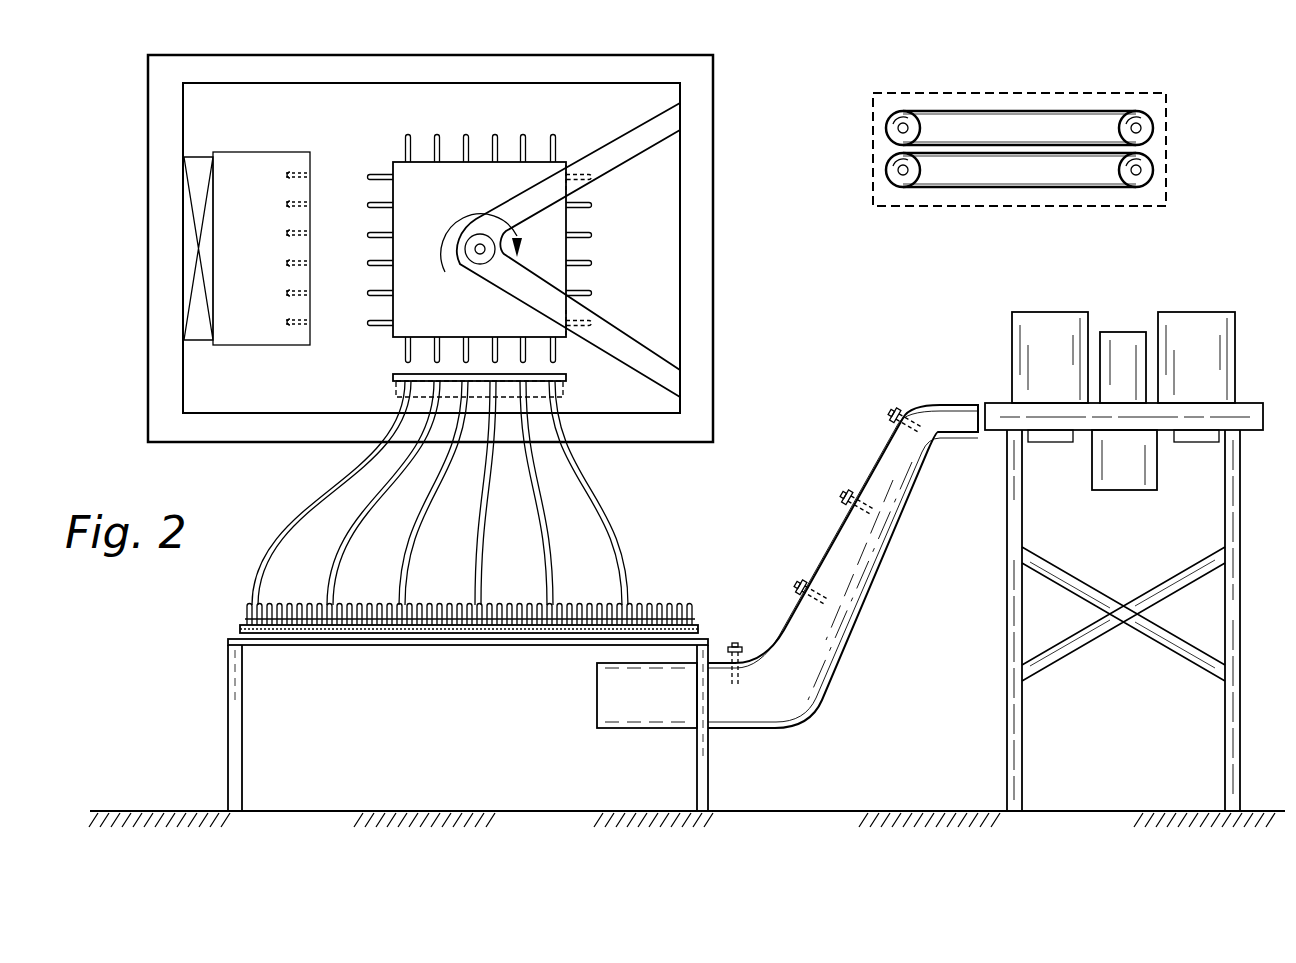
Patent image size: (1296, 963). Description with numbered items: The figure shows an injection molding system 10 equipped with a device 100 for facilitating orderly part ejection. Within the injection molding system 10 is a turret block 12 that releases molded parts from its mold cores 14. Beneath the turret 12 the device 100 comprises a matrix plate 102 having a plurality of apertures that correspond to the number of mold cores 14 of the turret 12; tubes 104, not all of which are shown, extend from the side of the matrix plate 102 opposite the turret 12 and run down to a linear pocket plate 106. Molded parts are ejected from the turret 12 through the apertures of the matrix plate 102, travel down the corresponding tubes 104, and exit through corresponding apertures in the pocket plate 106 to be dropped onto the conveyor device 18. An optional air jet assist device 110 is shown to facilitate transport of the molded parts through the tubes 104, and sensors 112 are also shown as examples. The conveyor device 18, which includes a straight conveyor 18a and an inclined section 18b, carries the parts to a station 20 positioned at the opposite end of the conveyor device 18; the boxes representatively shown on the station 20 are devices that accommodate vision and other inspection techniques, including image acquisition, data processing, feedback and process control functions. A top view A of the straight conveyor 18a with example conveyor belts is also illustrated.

The injection molding system 10 is at (652, 214).
The turret block 12 is at (480, 162).
The mold cores 14 is at (272, 152).
The conveyor device 18 is at (771, 606).
The straight conveyor 18a is at (622, 718).
The conveyor inclined section 18b is at (856, 578).
The station 20 is at (1198, 280).
The device for facilitating orderly part ejection 100 is at (604, 461).
The matrix plate 102 is at (396, 374).
The tubes 104 is at (350, 537).
The linear pocket plate 106 is at (240, 625).
The air jet assist device 110 is at (397, 389).
The sensors 112 is at (437, 615).
The top view of the straight conveyor A is at (1168, 150).